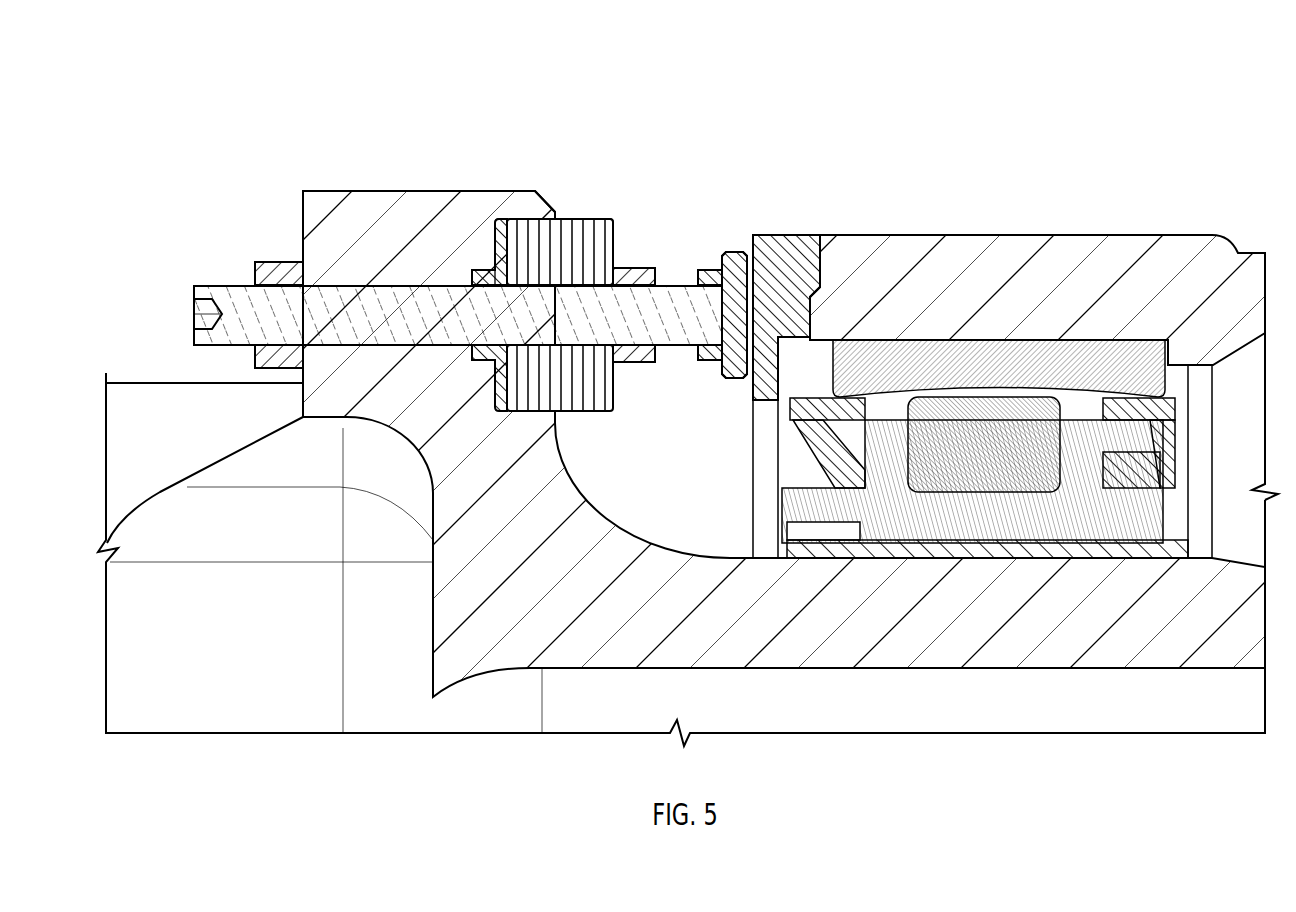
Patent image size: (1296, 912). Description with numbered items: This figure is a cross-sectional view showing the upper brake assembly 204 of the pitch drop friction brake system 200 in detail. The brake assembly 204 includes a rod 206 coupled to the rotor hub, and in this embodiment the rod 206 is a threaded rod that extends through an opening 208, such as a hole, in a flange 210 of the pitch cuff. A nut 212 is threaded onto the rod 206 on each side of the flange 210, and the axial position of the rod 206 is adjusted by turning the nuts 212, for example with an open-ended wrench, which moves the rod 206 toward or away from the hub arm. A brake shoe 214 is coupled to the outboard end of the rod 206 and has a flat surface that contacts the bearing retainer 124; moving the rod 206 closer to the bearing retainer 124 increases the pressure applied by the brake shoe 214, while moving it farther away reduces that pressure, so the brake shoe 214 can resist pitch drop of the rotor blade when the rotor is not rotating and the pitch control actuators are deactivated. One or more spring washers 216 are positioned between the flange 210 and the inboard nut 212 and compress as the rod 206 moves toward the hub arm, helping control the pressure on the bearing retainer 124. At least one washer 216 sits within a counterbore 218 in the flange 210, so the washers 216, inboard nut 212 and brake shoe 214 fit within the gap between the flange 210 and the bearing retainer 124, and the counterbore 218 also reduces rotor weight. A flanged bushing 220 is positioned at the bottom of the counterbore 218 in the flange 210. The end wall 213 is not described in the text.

The pitch drop friction brake system 200 is at (182, 63).
The brake assembly 204 is at (224, 163).
The rod 206 is at (222, 285).
The opening 208 is at (388, 285).
The flange 210 is at (529, 191).
The nut 212 is at (278, 262).
The end wall 213 is at (752, 243).
The brake shoe 214 is at (718, 268).
The spring washers 216 is at (530, 235).
The counterbore 218 is at (552, 219).
The flanged bushing 220 is at (520, 262).
The bearing retainer 124 is at (790, 235).